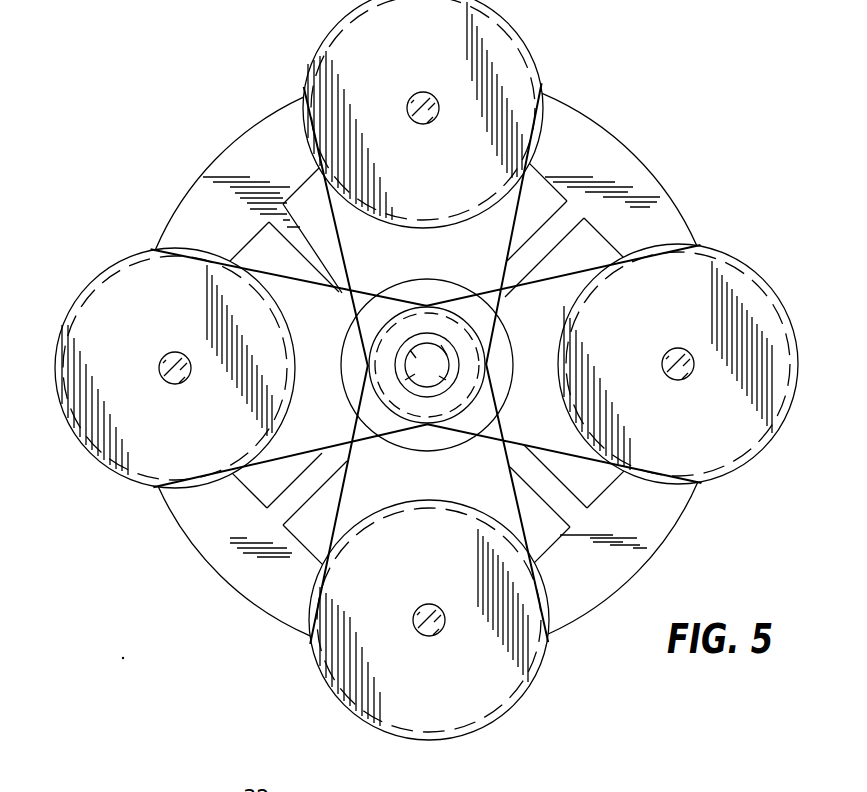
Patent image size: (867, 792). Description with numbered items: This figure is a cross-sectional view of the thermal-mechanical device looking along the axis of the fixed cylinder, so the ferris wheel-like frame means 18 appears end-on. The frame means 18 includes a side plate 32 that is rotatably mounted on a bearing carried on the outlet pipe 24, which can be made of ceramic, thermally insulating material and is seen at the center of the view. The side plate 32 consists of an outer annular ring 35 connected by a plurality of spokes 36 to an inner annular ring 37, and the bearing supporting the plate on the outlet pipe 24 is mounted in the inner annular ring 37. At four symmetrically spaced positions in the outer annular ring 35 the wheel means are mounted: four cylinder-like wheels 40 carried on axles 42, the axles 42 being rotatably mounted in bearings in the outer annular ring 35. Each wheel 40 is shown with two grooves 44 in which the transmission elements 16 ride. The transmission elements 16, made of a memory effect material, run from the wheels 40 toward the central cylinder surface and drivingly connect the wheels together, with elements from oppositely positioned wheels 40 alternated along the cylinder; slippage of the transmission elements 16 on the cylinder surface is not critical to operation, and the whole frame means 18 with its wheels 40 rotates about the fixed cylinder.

The transmission elements 16 is at (508, 232).
The frame means 18 is at (643, 167).
The outlet pipe 24 is at (492, 368).
The side plate 32 is at (637, 228).
The outer annular ring 35 is at (600, 152).
The spokes 36 is at (313, 243).
The inner annular ring 37 is at (430, 290).
The wheels 40 is at (507, 80).
The axles 42 is at (423, 92).
The grooves 44 is at (527, 50).